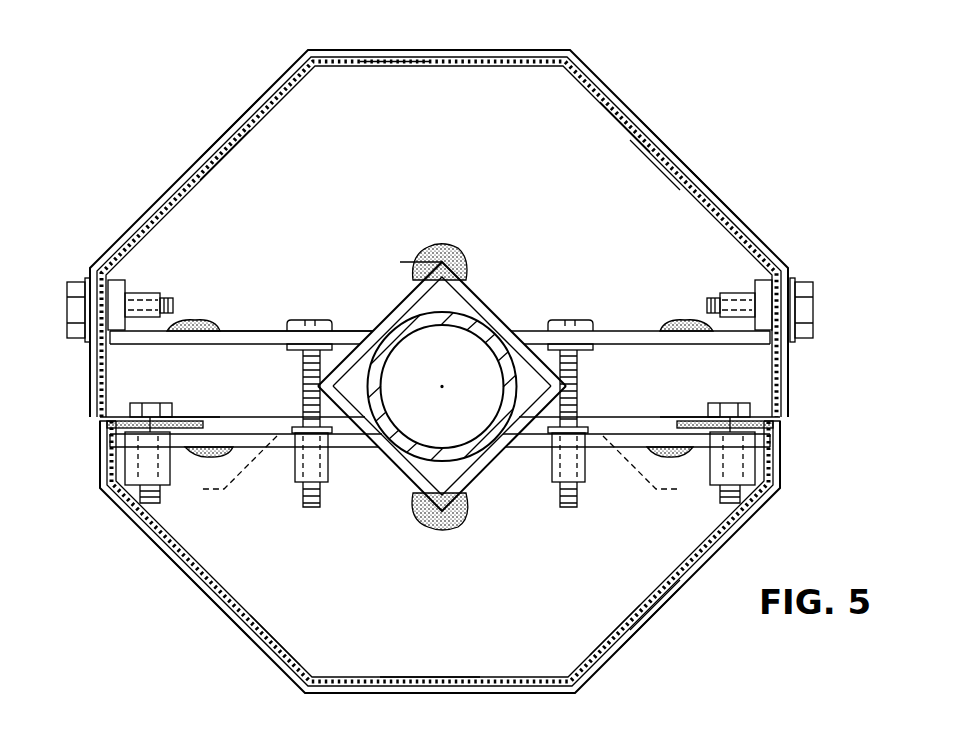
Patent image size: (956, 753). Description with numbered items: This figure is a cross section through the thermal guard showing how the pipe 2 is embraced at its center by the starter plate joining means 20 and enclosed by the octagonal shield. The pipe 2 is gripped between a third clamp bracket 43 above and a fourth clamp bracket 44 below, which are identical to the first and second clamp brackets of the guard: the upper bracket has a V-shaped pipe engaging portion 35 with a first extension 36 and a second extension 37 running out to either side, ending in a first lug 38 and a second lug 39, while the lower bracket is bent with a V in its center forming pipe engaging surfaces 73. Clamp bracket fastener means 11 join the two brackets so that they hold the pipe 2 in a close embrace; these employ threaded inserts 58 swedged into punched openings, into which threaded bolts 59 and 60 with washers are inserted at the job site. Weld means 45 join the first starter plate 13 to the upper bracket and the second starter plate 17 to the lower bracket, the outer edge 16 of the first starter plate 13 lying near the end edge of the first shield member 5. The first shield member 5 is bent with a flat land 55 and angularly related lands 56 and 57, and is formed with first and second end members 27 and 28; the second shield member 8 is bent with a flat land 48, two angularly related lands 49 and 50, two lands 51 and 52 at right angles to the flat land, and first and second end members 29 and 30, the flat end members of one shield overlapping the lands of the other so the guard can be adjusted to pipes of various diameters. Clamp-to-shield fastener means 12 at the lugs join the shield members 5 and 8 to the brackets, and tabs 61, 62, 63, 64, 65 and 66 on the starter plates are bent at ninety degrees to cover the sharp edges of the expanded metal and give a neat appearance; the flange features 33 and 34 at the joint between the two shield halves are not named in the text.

The pipe 2 is at (527, 389).
The first shield member 5 is at (650, 150).
The second shield member 8 is at (649, 603).
The clamp bracket fastener means 11 is at (300, 372).
The clamp-to-shield fastener means 12 is at (143, 287).
The first starter plate 13 is at (646, 124).
The outer edge 16 is at (680, 160).
The second starter plate 17 is at (703, 573).
The starter plate joining means 20 is at (470, 216).
The first end member 27 is at (793, 367).
The second end member 28 is at (88, 378).
The first end member 29 is at (692, 416).
The second end member 30 is at (188, 416).
The right lower flange 33 is at (786, 430).
The left lower flange 34 is at (92, 424).
The pipe engaging portion 35 is at (456, 296).
The first extension 36 is at (606, 330).
The second extension 37 is at (253, 330).
The first lug 38 is at (766, 275).
The second lug 39 is at (120, 281).
The third clamp bracket 43 is at (350, 329).
The fourth clamp bracket 44 is at (349, 448).
The weld means 45 is at (470, 252).
The flat land 48 is at (425, 678).
The angularly related land 49 is at (284, 670).
The angularly related land 50 is at (620, 627).
The land 51 is at (783, 470).
The land 52 is at (99, 465).
The flat land 55 is at (396, 62).
The angularly related land 56 is at (222, 160).
The angularly related land 57 is at (616, 120).
The threaded insert 58 is at (150, 297).
The threaded bolt 59 is at (312, 508).
The threaded bolt 60 is at (66, 310).
The tab 61 is at (238, 120).
The tab 62 is at (452, 49).
The tab 63 is at (718, 197).
The tab 64 is at (657, 625).
The tab 65 is at (428, 692).
The tab 66 is at (207, 598).
The pipe engaging surfaces 73 is at (420, 506).